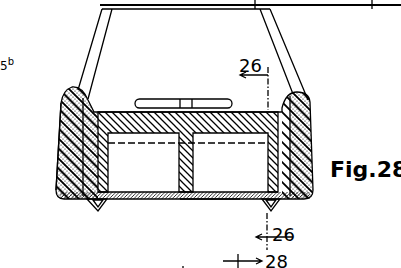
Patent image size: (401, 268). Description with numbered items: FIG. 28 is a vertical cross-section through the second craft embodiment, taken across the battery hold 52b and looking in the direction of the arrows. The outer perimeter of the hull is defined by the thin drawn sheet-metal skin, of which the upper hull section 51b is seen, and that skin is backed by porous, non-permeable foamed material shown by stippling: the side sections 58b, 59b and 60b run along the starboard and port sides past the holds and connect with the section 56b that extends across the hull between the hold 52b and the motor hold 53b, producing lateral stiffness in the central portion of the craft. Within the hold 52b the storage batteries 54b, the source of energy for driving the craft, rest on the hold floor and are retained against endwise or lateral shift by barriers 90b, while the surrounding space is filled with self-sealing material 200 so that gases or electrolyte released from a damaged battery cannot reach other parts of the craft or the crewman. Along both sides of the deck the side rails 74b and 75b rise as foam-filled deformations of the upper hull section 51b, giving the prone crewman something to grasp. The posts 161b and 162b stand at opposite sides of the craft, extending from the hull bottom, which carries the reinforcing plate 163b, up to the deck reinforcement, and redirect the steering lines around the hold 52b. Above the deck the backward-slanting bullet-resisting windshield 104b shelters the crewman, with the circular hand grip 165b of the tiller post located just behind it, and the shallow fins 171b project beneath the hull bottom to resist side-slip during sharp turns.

The curved windshield 104b is at (273, 43).
The post 161b is at (250, 15).
The side rail 74b is at (72, 90).
The side rail 75b is at (300, 93).
The upper hull section 51b is at (55, 119).
The porous material side section 59b is at (61, 154).
The porous material side section 60b is at (10, 173).
The porous material side section 58b is at (316, 148).
The post 162b is at (313, 186).
The hold 52b is at (128, 137).
The storage batteries 54b is at (188, 162).
The barriers 90b is at (121, 194).
The reinforcing plate 163b is at (208, 198).
The shallow fins 171b is at (93, 204).
The circular hand grip 165b is at (175, 98).
The self-sealing material 200 is at (190, 118).
The hold 53b is at (11, 261).
The porous material section 56b is at (161, 264).